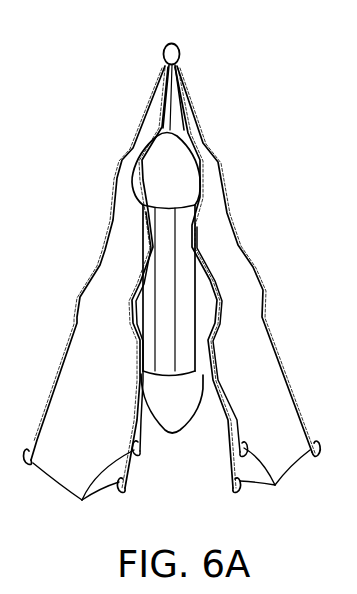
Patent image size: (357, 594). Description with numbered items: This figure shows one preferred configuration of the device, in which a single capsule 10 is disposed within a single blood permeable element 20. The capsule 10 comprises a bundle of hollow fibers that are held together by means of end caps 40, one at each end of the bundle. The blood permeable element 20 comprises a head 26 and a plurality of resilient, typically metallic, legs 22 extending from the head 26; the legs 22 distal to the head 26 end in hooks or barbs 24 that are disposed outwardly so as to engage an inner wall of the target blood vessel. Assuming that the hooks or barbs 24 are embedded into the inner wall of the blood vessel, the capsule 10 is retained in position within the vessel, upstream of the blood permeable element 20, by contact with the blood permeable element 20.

The capsule 10 is at (131, 349).
The blood permeable element 20 is at (230, 133).
The legs 22 is at (265, 283).
The hooks or barbs 24 is at (171, 491).
The head 26 is at (173, 45).
The end caps 40 is at (188, 177).